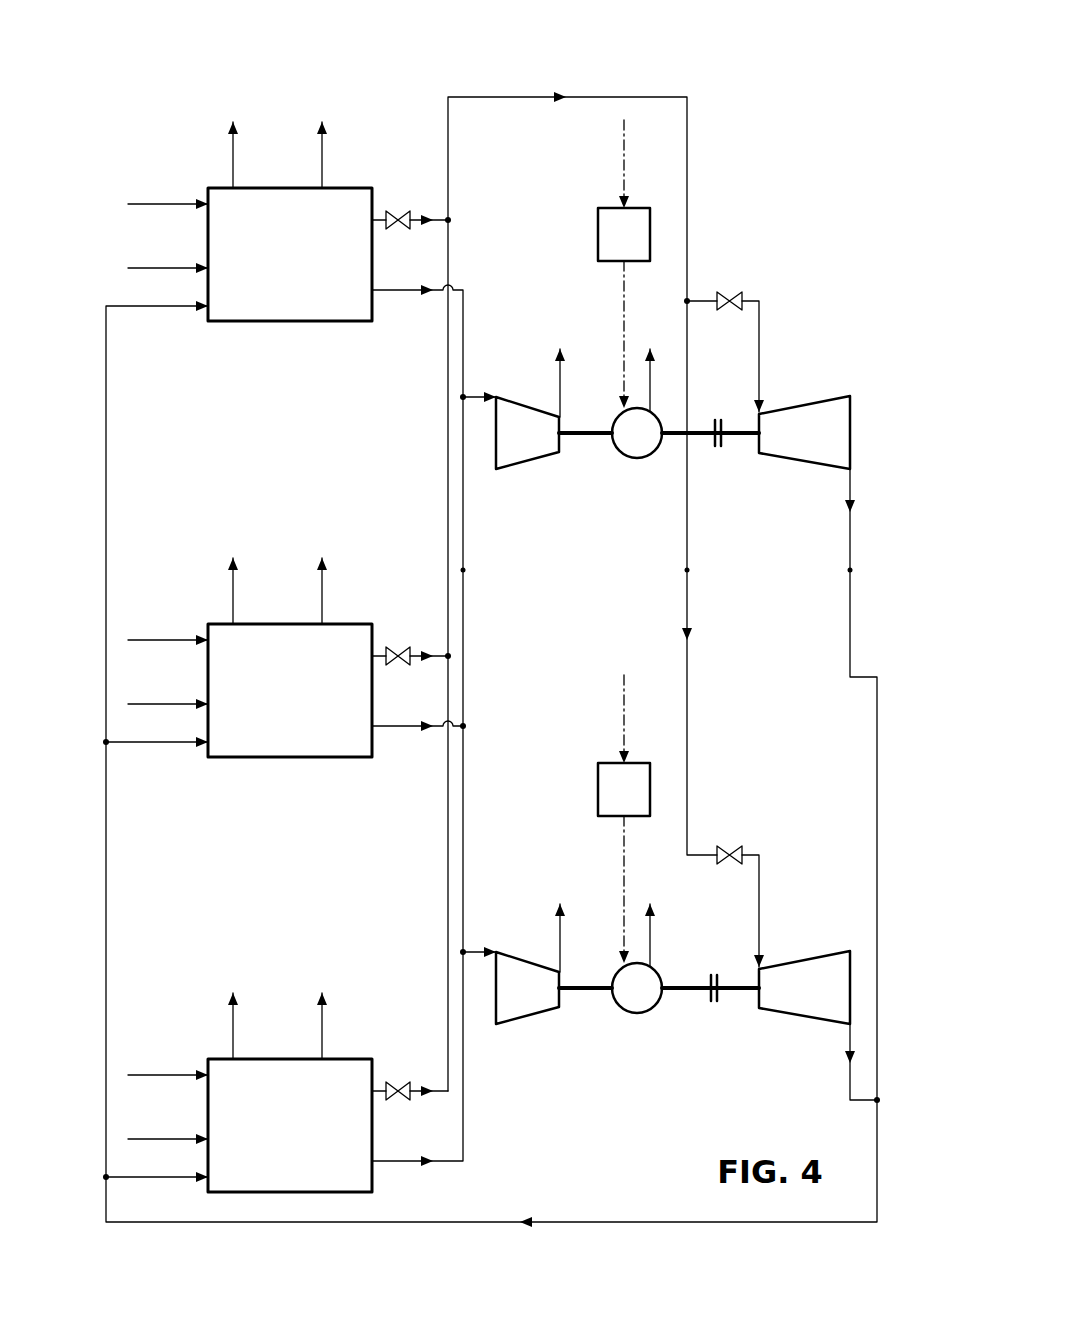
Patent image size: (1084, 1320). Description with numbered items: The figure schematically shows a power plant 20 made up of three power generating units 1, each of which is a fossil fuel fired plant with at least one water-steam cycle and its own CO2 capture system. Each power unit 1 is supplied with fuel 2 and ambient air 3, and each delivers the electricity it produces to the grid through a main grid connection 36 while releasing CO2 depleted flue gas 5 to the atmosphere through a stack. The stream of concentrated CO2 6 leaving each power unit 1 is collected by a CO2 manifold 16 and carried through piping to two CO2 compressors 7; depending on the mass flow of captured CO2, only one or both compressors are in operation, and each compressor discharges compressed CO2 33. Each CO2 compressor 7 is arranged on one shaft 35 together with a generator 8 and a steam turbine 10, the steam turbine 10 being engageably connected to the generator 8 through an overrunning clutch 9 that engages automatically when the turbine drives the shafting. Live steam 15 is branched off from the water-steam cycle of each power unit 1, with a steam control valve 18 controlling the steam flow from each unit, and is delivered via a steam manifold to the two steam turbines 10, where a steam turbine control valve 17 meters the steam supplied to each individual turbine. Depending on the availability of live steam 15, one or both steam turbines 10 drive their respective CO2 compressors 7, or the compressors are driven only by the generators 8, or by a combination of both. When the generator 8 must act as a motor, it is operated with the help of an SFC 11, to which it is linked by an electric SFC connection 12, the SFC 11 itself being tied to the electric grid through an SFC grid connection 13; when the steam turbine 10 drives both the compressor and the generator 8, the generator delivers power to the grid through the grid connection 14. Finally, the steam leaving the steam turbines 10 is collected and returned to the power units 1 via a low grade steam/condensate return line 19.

The power plant 20 is at (108, 17).
The power generating unit 1 is at (282, 271).
The fuel supply 2 is at (151, 265).
The ambient air 3 is at (151, 201).
The CO2 depleted flue gas 5 is at (321, 576).
The concentrated CO2 6 is at (397, 287).
The CO2 compressor 7 is at (517, 445).
The generator 8 is at (629, 446).
The overrunning clutch 9 is at (718, 417).
The steam turbine 10 is at (794, 445).
The SFC 11 is at (612, 248).
The electric SFC connection 12 is at (621, 367).
The SFC grid connection 13 is at (621, 177).
The grid connection 14 is at (650, 644).
The live steam 15 is at (687, 570).
The CO2 manifold 16 is at (463, 570).
The steam turbine control valve 17 is at (729, 293).
The steam control valve 18 is at (398, 213).
The low grade steam/condensate return line 19 is at (850, 570).
The compressed CO2 33 is at (557, 377).
The shaft 35 is at (703, 438).
The main grid connection 36 is at (233, 576).